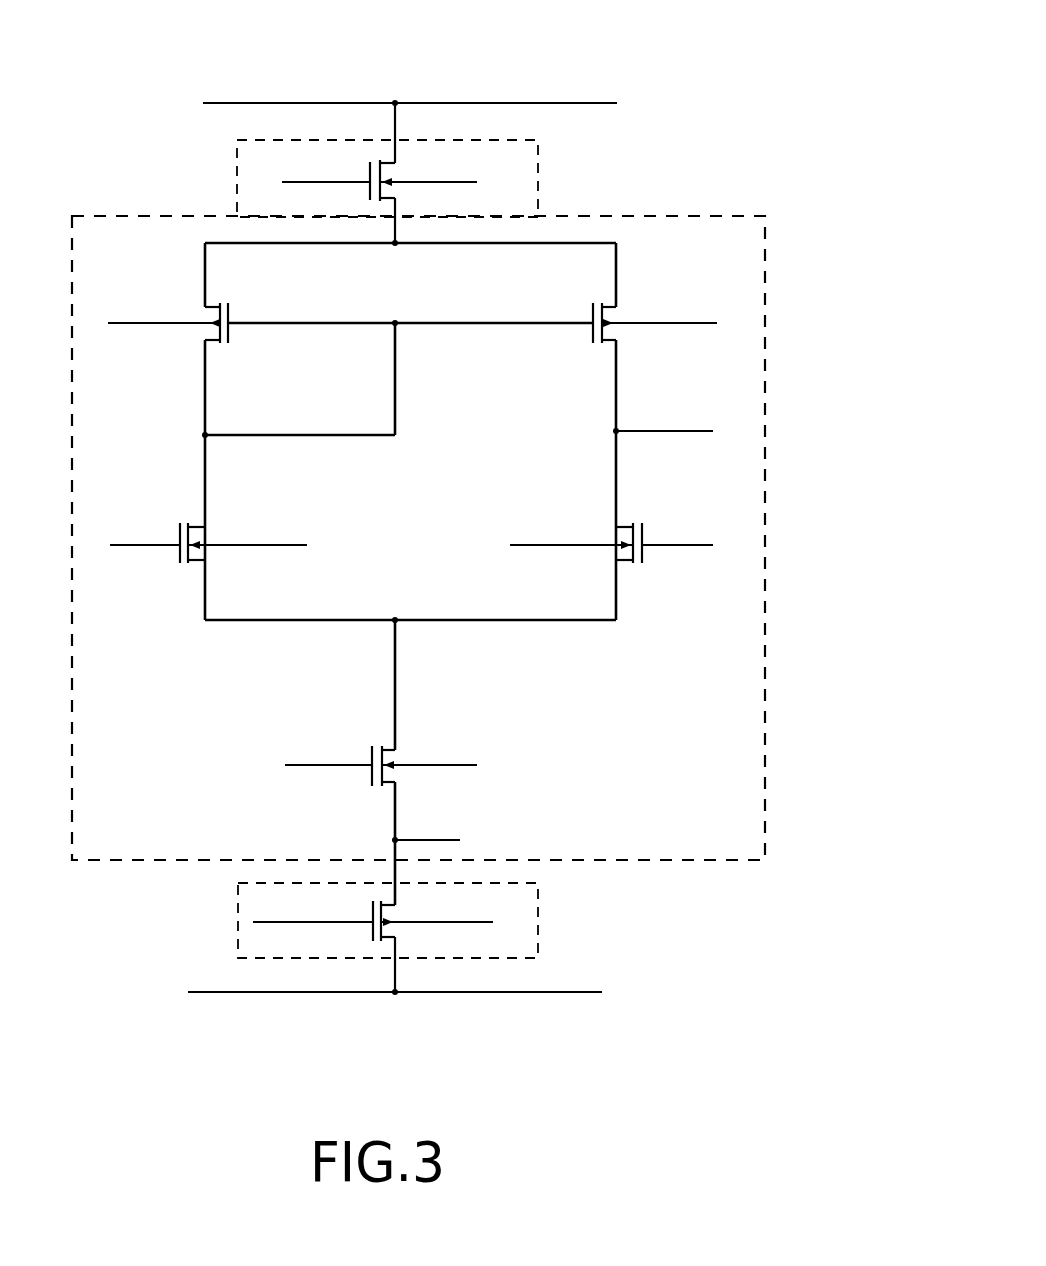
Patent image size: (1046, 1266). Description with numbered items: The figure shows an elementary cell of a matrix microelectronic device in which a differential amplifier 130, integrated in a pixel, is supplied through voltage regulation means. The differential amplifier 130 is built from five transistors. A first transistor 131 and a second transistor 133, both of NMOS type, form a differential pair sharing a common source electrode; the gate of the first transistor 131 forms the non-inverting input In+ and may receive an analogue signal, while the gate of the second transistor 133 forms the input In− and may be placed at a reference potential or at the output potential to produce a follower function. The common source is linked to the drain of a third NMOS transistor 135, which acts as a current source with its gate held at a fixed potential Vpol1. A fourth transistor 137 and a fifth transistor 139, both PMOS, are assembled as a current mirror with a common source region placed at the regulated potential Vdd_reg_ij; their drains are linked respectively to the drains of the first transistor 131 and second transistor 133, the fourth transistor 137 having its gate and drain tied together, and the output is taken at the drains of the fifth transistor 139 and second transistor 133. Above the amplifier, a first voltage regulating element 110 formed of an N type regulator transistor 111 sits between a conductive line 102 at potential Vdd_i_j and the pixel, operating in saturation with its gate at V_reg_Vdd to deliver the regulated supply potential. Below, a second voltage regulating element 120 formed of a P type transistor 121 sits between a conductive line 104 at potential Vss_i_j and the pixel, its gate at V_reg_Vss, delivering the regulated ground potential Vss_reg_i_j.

The conductive line 102 is at (546, 97).
The conductive line 104 is at (532, 1003).
The first voltage regulating element 110 is at (551, 162).
The regulator transistor 111 is at (380, 150).
The second voltage regulating element 120 is at (552, 926).
The transistor 121 is at (358, 943).
The differential amplifier 130 is at (787, 348).
The first transistor 131 is at (188, 585).
The second transistor 133 is at (633, 581).
The third transistor 135 is at (345, 780).
The fourth transistor 137 is at (188, 336).
The fifth transistor 139 is at (634, 289).